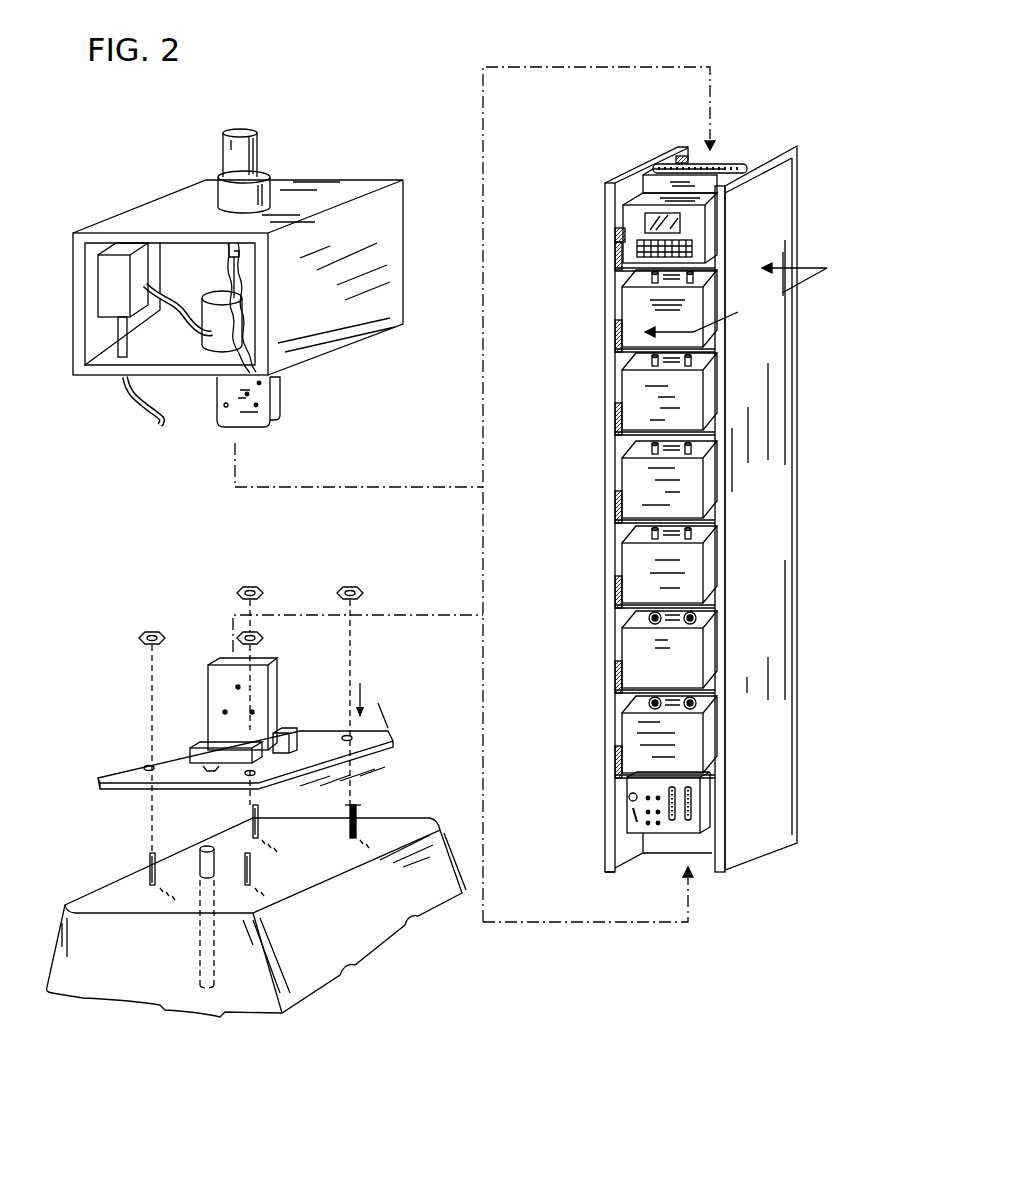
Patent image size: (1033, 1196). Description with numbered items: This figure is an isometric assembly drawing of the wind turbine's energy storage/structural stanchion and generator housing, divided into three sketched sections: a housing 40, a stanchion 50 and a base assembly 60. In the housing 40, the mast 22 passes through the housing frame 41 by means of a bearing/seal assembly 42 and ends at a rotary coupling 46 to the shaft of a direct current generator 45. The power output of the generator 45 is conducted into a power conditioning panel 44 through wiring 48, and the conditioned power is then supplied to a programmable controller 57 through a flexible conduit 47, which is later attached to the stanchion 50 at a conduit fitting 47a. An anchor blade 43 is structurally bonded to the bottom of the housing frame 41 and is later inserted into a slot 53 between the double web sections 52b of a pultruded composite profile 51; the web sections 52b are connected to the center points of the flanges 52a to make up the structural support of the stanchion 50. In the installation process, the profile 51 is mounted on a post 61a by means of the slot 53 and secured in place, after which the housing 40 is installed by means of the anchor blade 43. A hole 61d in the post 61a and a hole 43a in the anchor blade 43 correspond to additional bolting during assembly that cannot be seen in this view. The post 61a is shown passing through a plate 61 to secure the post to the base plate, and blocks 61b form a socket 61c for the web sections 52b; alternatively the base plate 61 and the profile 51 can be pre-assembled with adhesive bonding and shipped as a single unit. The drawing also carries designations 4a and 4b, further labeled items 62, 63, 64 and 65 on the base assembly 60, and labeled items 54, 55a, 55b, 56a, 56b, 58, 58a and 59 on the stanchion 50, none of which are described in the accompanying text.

The housing 40 is at (88, 151).
The housing frame 41 is at (141, 211).
The mast 22 is at (229, 152).
The bearing/seal assembly 42 is at (268, 183).
The power conditioning panel 44 is at (113, 276).
The direct current generator 45 is at (222, 323).
The rotary coupling 46 is at (238, 249).
The flexible conduit 47 is at (140, 413).
The wiring 48 is at (173, 323).
The anchor blade 43 is at (250, 393).
The hole in anchor blade 43a is at (223, 409).
The base assembly 60 is at (118, 557).
The plate 61 is at (129, 769).
The post 61a is at (223, 678).
The blocks 61b is at (212, 753).
The socket 61c is at (293, 732).
The hole in post 61d is at (222, 710).
The nut 62 is at (364, 572).
The anchor bolt 63 is at (357, 812).
The concrete base 64 is at (103, 895).
The peg 65 is at (203, 857).
The section view direction 4b is at (378, 703).
The stanchion 50 is at (567, 117).
The pultruded composite profile 51 is at (601, 539).
The flanges 52a is at (776, 156).
The double web sections 52b is at (743, 164).
The slot 53 is at (680, 148).
The upper panel 54 is at (662, 184).
The controller unit 55a is at (622, 325).
The controller unit 55b is at (635, 408).
The power unit 56a is at (645, 608).
The power unit 56b is at (643, 697).
The programmable controller 57 is at (635, 230).
The conduit fitting 47a is at (619, 233).
The terminal unit 58 is at (655, 783).
The indicator 58a is at (687, 832).
The relay unit 59 is at (615, 502).
The section view direction 4a is at (736, 294).